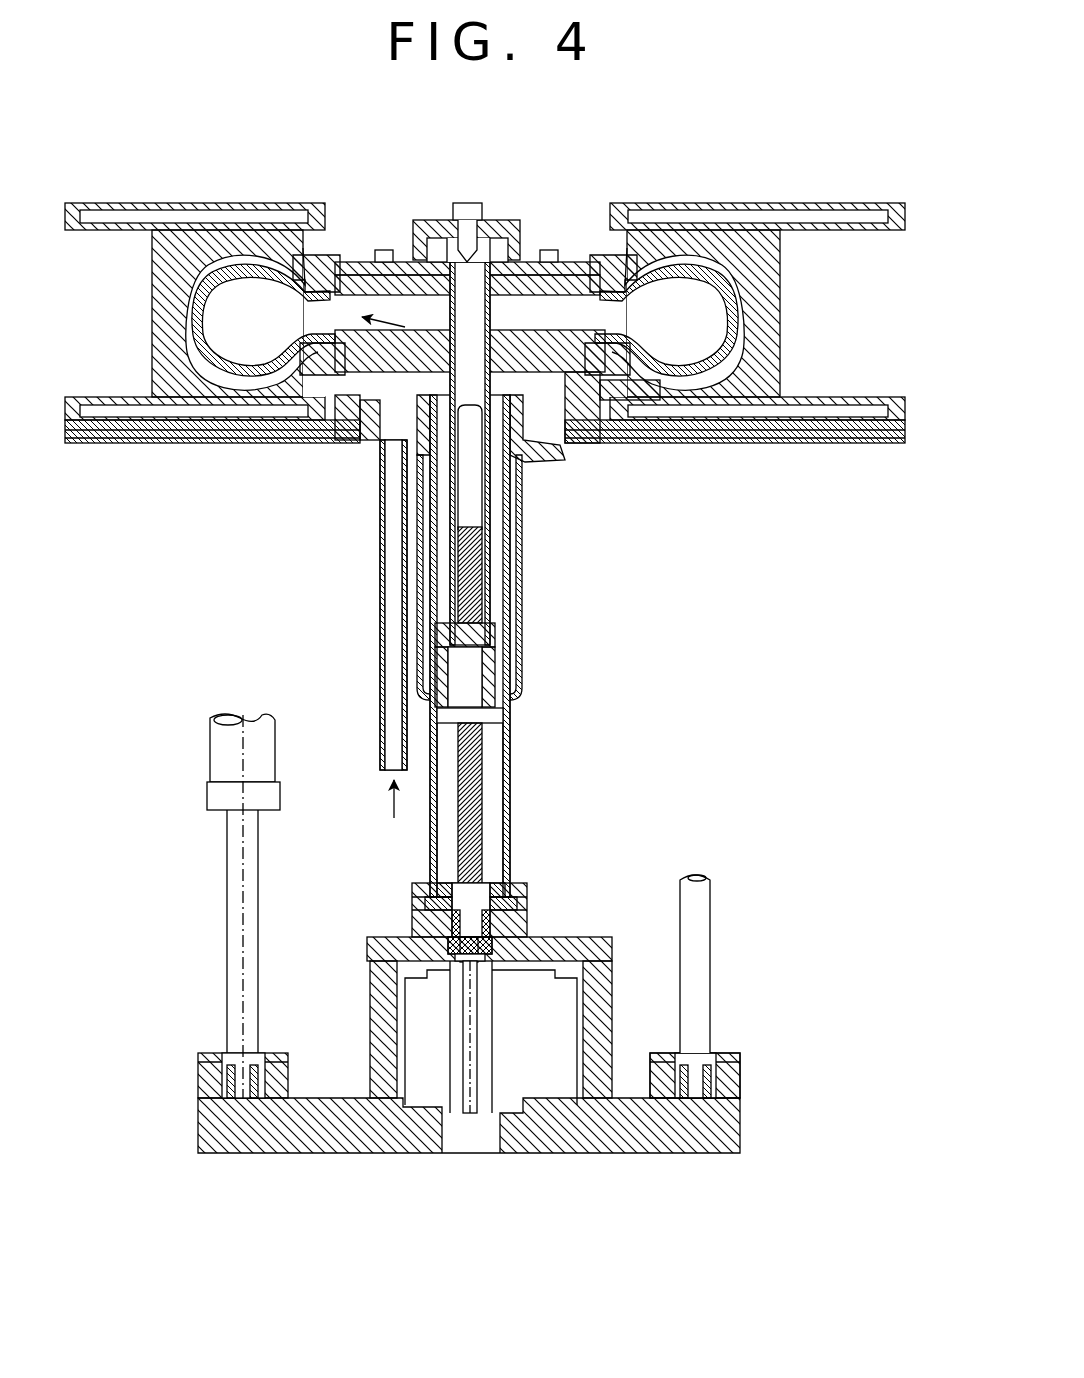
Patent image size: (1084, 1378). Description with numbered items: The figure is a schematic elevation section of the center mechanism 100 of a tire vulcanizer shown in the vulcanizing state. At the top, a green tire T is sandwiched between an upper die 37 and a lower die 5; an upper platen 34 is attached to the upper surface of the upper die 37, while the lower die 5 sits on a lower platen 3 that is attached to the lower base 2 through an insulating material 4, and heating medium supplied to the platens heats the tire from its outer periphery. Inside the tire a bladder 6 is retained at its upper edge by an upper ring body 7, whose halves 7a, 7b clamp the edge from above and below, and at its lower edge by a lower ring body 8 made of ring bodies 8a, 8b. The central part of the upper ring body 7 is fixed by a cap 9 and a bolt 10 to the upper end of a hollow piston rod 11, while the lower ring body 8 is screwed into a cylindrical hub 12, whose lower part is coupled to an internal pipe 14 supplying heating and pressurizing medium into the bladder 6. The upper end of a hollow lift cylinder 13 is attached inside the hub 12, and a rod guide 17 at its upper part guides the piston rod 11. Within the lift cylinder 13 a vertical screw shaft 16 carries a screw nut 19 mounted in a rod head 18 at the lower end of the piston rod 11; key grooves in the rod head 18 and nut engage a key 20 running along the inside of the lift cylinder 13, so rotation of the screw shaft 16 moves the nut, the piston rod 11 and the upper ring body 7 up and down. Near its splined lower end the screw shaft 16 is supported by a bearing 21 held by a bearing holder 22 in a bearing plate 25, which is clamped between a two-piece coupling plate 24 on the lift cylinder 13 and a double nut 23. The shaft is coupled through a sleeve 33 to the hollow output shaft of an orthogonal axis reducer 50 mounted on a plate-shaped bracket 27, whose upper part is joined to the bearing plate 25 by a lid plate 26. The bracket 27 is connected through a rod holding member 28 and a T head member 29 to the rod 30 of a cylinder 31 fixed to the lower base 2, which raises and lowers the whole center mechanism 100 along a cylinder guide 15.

The lower base 2 is at (485, 467).
The lower platen 3 is at (772, 430).
The insulating material 4 is at (880, 440).
The lower die 5 is at (777, 350).
The bladder 6 is at (750, 280).
The green tire T is at (730, 305).
The upper ring body 7 is at (485, 219).
The upper ring body 7a is at (545, 262).
The upper ring body 7b is at (590, 262).
The lower ring body 8 is at (521, 426).
The lower ring body 8a is at (548, 400).
The lower ring body 8b is at (648, 385).
The cap 9 is at (413, 232).
The bolt 10 is at (460, 202).
The piston rod 11 is at (455, 540).
The hub 12 is at (540, 458).
The lift cylinder 13 is at (430, 855).
The internal pipe 14 is at (380, 630).
The cylinder guide 15 is at (522, 595).
The screw shaft 16 is at (482, 780).
The rod guide 17 is at (492, 262).
The rod head 18 is at (408, 700).
The screw nut 19 is at (495, 665).
The key 20 is at (503, 740).
The bearing 21 is at (440, 918).
The bearing holder 22 is at (498, 888).
The nut 23 is at (445, 948).
The coupling plate 24 is at (532, 890).
The bearing plate 25 is at (530, 922).
The lid plate 26 is at (612, 932).
The bracket 27 is at (372, 1082).
The rod holding member 28 is at (748, 1082).
The T head member 29 is at (700, 1105).
The rod 30 is at (718, 930).
The cylinder 31 is at (222, 708).
The sleeve 33 is at (478, 1113).
The upper platen 34 is at (165, 203).
The upper die 37 is at (152, 275).
The reducer 50 is at (565, 1080).
The center mechanism 100 is at (628, 665).